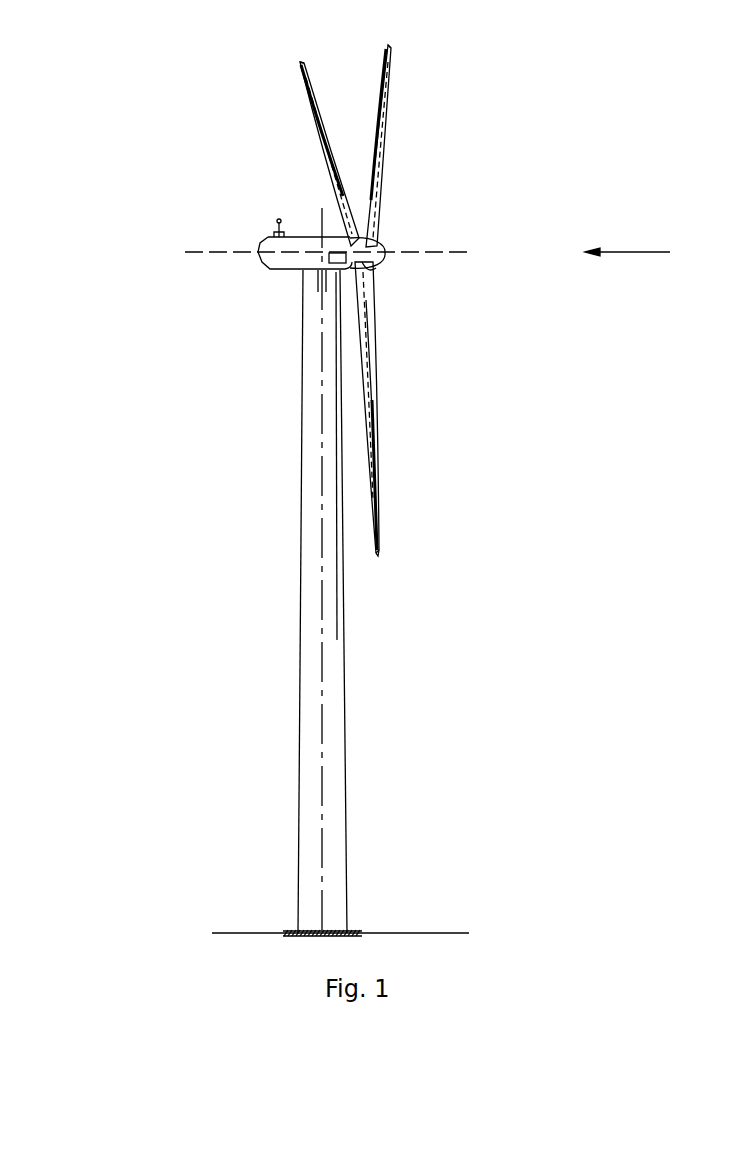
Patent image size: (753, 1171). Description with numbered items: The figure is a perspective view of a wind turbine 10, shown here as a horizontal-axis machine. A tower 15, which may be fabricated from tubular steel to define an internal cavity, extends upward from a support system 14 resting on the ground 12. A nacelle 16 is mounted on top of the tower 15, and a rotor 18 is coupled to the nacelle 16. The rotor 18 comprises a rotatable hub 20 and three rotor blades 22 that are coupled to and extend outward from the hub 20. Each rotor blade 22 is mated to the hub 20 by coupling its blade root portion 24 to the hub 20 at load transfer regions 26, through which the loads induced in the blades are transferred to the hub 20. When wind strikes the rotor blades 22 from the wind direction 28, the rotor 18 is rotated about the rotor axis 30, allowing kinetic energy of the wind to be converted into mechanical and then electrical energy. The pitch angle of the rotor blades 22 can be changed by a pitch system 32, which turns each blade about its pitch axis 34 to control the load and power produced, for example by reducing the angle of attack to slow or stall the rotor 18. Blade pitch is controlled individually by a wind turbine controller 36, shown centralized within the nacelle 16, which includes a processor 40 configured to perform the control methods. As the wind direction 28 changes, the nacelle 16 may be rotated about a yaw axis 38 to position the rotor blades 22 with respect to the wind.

The wind turbine 10 is at (110, 58).
The ground 12 is at (233, 930).
The support system 14 is at (290, 930).
The tower 15 is at (308, 580).
The nacelle 16 is at (283, 270).
The rotor 18 is at (398, 166).
The rotatable hub 20 is at (384, 246).
The rotor blade 22 is at (320, 122).
The blade root portion 24 is at (380, 345).
The load transfer region 26 is at (372, 268).
The wind direction 28 is at (645, 251).
The rotor axis 30 is at (443, 253).
The pitch system 32 is at (348, 292).
The pitch axis 34 is at (297, 62).
The wind turbine controller 36 is at (323, 292).
The yaw axis 38 is at (322, 640).
The processor 40 is at (335, 228).